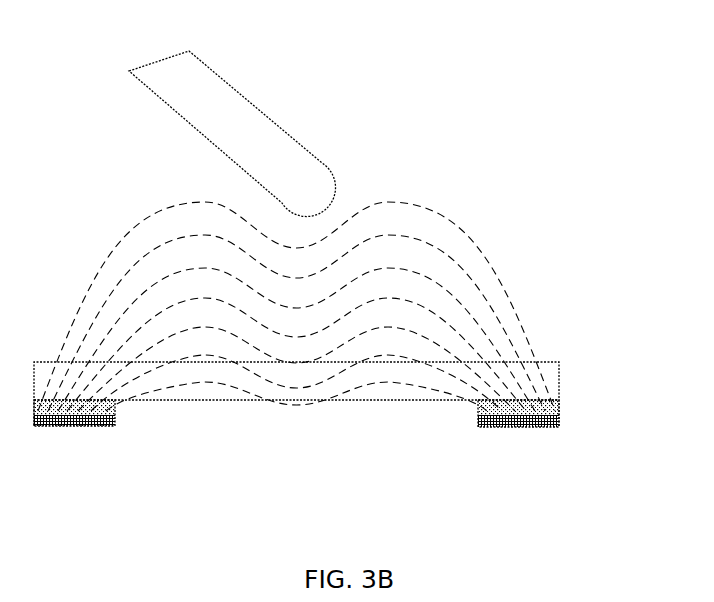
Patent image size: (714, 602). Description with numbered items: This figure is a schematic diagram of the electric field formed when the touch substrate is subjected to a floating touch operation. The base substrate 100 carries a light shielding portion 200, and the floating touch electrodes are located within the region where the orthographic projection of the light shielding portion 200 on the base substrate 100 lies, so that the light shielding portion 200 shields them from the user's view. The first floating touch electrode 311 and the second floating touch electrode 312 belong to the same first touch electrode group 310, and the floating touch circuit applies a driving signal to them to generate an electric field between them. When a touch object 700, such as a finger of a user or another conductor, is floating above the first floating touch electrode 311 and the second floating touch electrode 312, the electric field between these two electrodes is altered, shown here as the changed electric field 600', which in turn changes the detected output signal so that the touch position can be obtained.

The touch object 700 is at (322, 162).
The changed electric field 600' is at (314, 306).
The base substrate 100 is at (545, 388).
The light shielding portion 200 is at (559, 400).
The first touch electrode group 310 is at (617, 472).
The first floating touch electrode 311 is at (75, 407).
The second floating touch electrode 312 is at (560, 427).